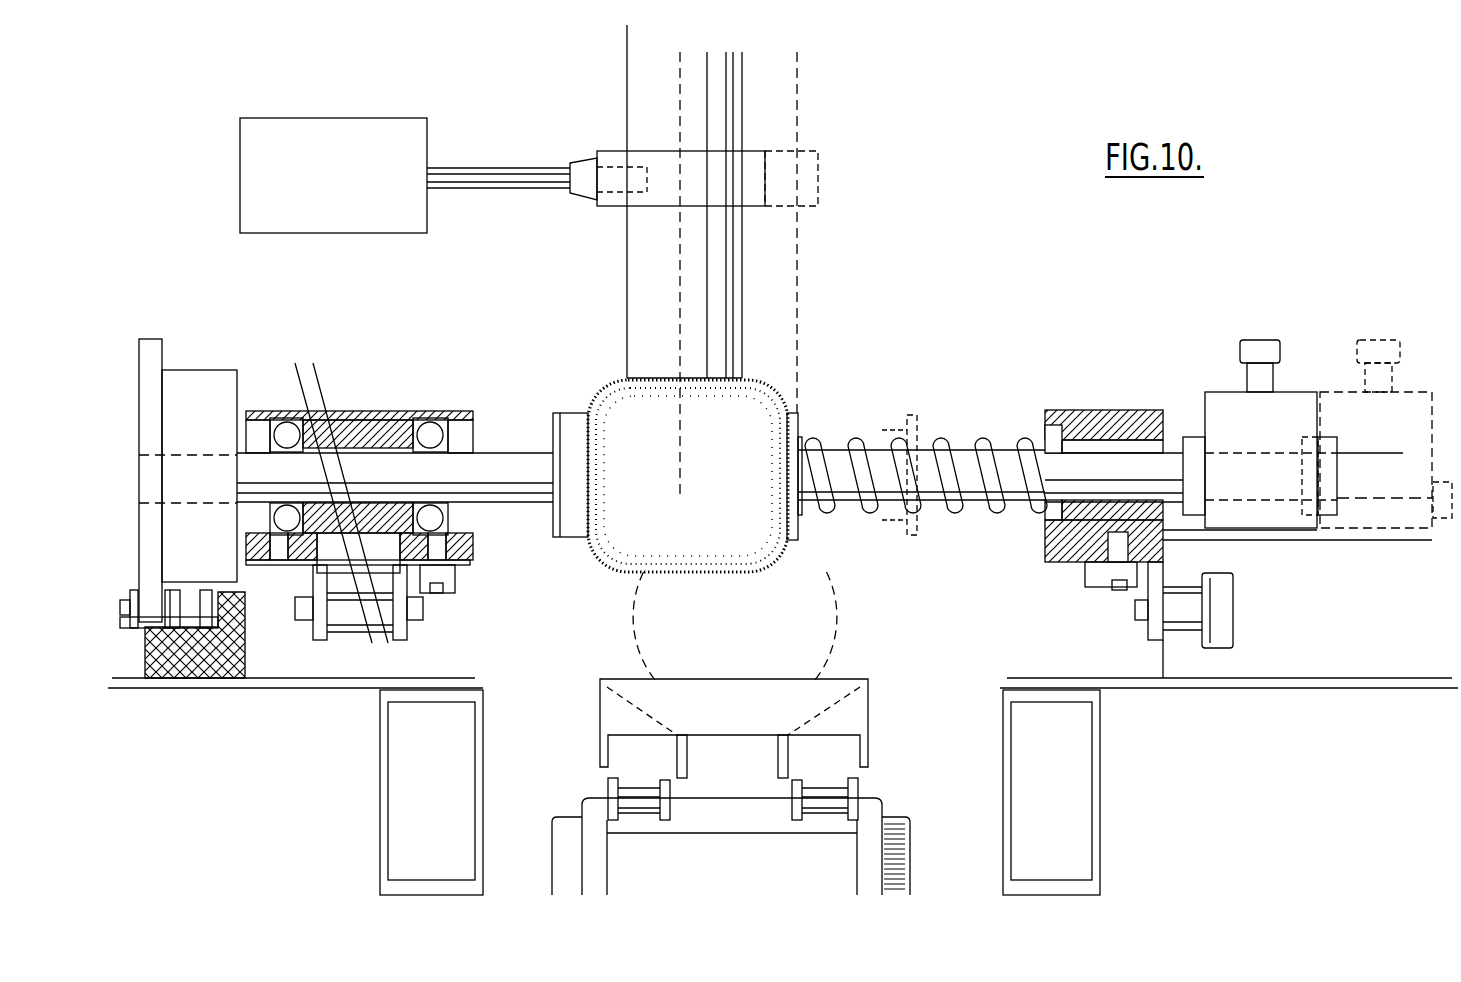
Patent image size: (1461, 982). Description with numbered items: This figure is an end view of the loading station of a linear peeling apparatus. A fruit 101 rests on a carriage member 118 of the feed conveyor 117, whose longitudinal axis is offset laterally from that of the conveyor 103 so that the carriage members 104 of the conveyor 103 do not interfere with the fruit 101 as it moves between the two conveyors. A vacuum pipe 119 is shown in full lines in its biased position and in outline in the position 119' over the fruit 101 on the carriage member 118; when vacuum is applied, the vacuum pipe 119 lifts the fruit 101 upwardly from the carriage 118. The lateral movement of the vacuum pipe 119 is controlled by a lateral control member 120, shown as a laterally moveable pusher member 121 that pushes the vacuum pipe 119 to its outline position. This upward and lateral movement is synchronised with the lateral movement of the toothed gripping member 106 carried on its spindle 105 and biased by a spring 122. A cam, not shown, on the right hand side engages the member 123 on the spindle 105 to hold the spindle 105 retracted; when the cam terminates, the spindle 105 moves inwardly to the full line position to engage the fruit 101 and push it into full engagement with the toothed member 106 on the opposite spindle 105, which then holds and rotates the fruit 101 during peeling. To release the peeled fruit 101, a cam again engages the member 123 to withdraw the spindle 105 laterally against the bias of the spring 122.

The fruit 101 is at (655, 455).
The conveyor 103 is at (360, 410).
The carriage members 104 is at (803, 412).
The spindle 105 is at (525, 490).
The toothed gripping member 106 is at (562, 428).
The feed conveyor 117 is at (853, 813).
The carriage members 118 is at (860, 730).
The vacuum pipe 119 is at (738, 262).
The vacuum pipe outline position 119' is at (832, 232).
The lateral control member 120 is at (482, 177).
The pusher member 121 is at (583, 187).
The spring 122 is at (965, 510).
The member 123 is at (1200, 443).